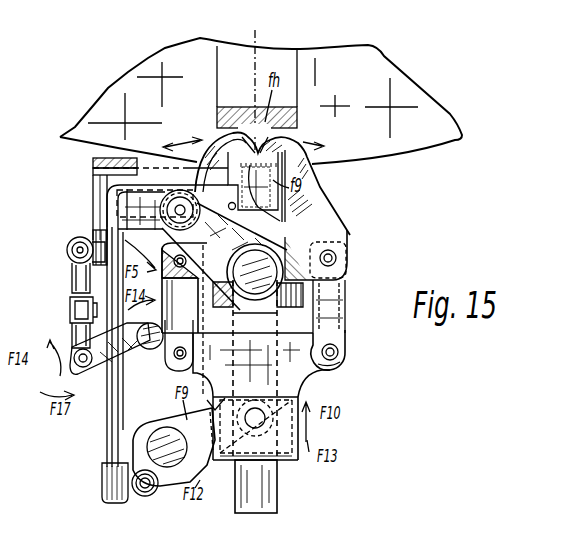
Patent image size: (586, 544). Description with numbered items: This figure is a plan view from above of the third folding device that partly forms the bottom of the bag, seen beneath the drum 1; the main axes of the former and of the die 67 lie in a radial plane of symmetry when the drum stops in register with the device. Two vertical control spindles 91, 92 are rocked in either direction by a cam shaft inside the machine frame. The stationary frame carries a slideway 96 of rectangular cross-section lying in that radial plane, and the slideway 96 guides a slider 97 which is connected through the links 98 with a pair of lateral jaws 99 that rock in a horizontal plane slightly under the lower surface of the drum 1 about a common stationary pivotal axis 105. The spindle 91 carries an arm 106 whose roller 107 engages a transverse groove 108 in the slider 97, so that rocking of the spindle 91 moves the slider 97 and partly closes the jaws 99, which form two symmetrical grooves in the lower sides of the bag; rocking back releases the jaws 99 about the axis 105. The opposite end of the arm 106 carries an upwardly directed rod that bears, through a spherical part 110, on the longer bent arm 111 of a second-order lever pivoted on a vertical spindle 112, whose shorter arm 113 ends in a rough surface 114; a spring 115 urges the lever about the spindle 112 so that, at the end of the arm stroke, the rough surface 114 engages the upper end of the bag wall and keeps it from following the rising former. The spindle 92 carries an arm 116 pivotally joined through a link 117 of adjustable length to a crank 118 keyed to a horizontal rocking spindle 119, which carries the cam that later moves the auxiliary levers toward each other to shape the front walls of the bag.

The drum 1 is at (393, 75).
The die 67 is at (236, 107).
The vertical control spindle 91 is at (164, 440).
The vertical control spindle 92 is at (152, 360).
The slideway 96 is at (272, 511).
The slider 97 is at (325, 372).
The links 98 is at (340, 303).
The lateral jaws 99 is at (330, 235).
The stationary pivotal axis 105 is at (272, 298).
The arm 106 is at (212, 460).
The roller 107 is at (300, 396).
The transverse groove 108 is at (290, 462).
The spherical part 110 is at (135, 500).
The longer bent arm 111 is at (107, 424).
The vertical spindle 112 is at (183, 230).
The shorter arm 113 is at (285, 214).
The rough surface 114 is at (238, 212).
The spring 115 is at (192, 186).
The arm 116 is at (133, 364).
The link 117 is at (72, 320).
The crank 118 is at (95, 208).
The horizontal rocking spindle 119 is at (93, 177).